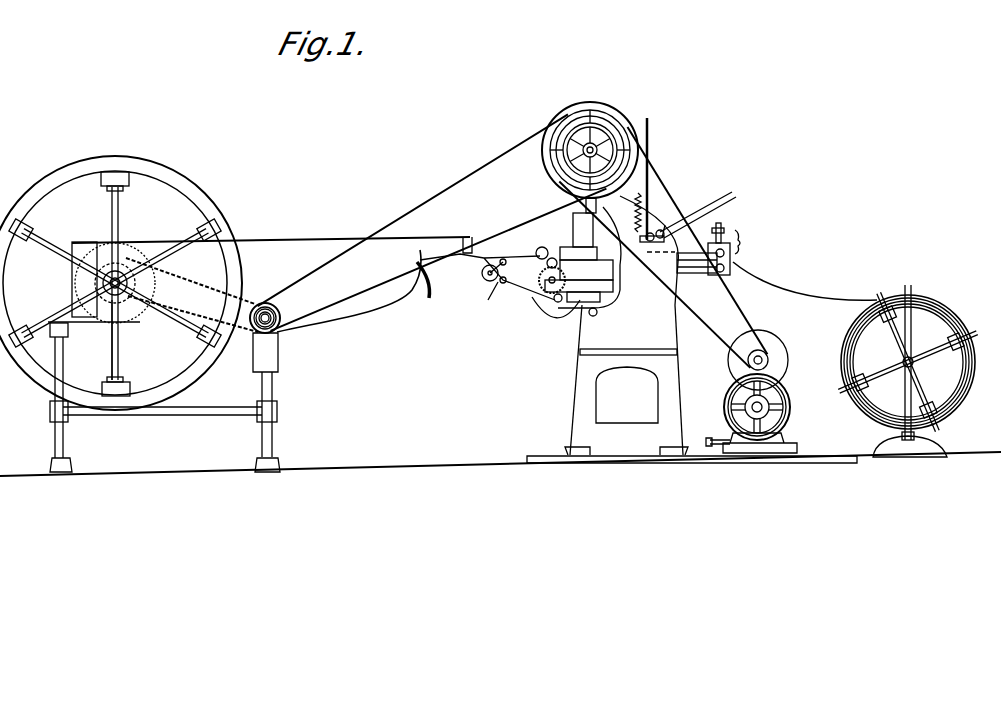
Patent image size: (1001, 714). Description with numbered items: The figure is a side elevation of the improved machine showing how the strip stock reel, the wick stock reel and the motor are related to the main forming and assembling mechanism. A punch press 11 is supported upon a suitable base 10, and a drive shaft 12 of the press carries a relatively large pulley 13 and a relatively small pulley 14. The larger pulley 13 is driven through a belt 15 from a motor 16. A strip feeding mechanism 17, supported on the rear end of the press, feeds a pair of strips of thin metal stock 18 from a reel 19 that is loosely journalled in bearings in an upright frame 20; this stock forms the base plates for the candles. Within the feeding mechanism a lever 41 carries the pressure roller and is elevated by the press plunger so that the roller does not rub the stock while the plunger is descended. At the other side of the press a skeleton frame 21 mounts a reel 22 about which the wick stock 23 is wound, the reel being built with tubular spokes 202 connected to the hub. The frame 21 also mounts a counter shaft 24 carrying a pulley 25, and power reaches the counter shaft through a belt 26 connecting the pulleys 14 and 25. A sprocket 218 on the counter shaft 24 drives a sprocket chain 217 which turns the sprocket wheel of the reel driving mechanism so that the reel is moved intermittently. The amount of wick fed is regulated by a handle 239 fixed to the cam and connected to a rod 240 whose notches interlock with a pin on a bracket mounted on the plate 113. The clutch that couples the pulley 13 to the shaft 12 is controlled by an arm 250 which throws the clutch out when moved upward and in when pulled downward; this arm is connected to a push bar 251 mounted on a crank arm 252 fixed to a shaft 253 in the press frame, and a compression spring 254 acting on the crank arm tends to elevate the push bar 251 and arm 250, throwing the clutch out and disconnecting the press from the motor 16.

The base 10 is at (596, 333).
The punch press 11 is at (657, 217).
The drive shaft 12 is at (594, 148).
The large pulley 13 is at (587, 110).
The small pulley 14 is at (552, 176).
The belt 15 is at (740, 312).
The motor 16 is at (779, 403).
The strip feeding mechanism 17 is at (735, 249).
The strip stock 18 is at (822, 296).
The strip stock reel 19 is at (956, 377).
The upright frame 20 is at (910, 318).
The skeleton frame 21 is at (195, 413).
The wick stock reel 22 is at (217, 178).
The wick stock 23 is at (362, 311).
The counter shaft 24 is at (278, 333).
The pulley 25 is at (291, 308).
The belt 26 is at (434, 216).
The lever 41 is at (671, 254).
The plate 113 is at (434, 266).
The tubular spokes 202 is at (120, 362).
The sprocket chain 217 is at (222, 284).
The sprocket 218 is at (273, 301).
The handle 239 is at (74, 253).
The rod 240 is at (280, 241).
The arm 250 is at (649, 158).
The push bar 251 is at (648, 188).
The crank arm 252 is at (669, 244).
The shaft 253 is at (716, 202).
The compression spring 254 is at (649, 177).